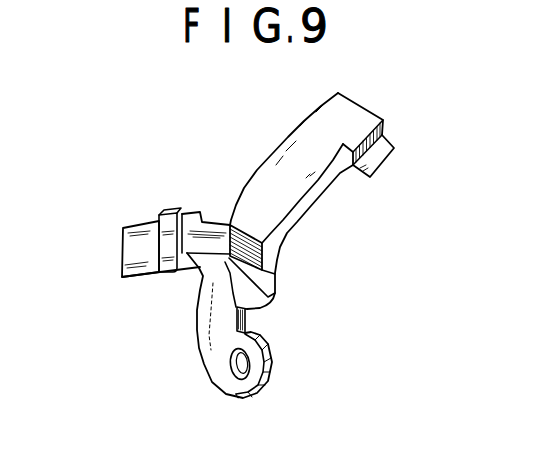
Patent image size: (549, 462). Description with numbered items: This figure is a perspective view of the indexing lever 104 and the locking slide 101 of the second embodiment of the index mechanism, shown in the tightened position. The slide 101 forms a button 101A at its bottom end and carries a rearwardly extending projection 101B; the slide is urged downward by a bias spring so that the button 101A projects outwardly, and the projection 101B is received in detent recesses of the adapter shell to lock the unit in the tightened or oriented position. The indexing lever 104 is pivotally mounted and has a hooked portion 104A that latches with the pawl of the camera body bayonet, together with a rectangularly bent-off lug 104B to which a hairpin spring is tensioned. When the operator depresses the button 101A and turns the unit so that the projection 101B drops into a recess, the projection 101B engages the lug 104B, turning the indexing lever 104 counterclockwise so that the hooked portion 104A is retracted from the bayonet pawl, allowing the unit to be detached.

The slide 101 is at (159, 276).
The button 101A is at (122, 250).
The projection 101B is at (262, 242).
The indexing lever 104 is at (221, 374).
The hooked portion 104A is at (386, 147).
The rectangularly bent-off portion 104B is at (257, 310).